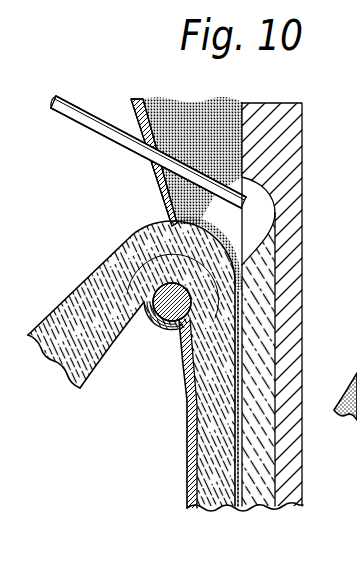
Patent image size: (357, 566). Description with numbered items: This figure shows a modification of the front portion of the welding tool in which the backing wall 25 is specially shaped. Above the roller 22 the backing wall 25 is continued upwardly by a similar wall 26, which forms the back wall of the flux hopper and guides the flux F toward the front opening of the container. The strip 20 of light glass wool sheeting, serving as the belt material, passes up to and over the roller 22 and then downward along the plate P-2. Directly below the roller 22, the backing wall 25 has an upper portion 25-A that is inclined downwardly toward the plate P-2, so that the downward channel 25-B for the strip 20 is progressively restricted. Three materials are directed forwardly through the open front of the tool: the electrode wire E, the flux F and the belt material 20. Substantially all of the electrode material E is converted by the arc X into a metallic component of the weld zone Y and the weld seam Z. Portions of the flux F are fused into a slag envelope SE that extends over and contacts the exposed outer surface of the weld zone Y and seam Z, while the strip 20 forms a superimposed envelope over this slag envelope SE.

The flux F is at (160, 100).
The electrode wire E is at (88, 128).
The wall 26 is at (157, 194).
The strip 20 is at (68, 294).
The roller 22 is at (156, 334).
The backing wall 25 is at (187, 472).
The upper portion of backing wall 25-A is at (175, 356).
The downward channel 25-B is at (208, 428).
The plate P-2 is at (287, 136).
The arc X is at (258, 207).
The weld zone Y is at (261, 254).
The weld seam Z is at (258, 303).
The slag envelope SE is at (240, 417).